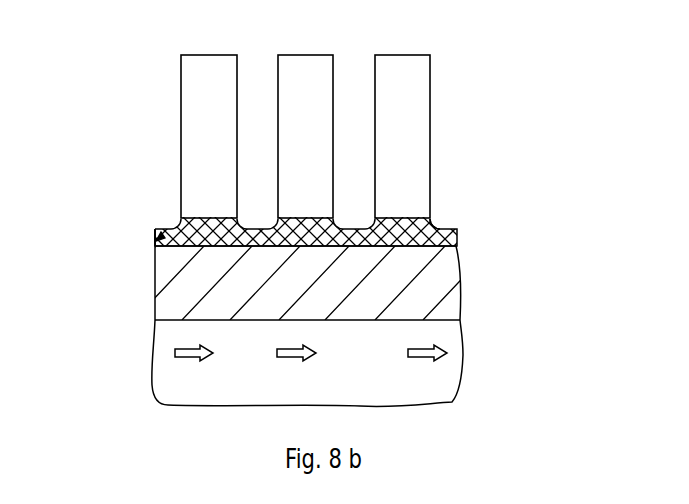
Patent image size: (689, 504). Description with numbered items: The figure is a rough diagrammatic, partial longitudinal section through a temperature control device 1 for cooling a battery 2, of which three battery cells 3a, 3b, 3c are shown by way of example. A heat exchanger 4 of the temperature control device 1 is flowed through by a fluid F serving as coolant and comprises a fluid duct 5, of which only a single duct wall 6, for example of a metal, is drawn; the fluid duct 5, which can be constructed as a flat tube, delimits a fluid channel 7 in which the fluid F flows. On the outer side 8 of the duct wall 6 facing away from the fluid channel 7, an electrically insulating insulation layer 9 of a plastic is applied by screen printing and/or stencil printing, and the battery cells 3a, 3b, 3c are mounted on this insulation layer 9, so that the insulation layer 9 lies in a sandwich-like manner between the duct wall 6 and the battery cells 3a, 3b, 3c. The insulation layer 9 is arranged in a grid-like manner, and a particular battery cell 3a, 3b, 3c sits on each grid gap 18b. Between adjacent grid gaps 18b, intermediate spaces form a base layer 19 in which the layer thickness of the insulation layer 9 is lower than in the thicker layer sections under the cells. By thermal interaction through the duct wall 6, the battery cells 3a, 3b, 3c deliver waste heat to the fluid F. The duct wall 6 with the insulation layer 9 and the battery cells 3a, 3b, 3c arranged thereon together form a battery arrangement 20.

The temperature control device 1 is at (486, 394).
The battery 2 is at (158, 124).
The battery cell 3a is at (220, 111).
The battery cell 3b is at (316, 111).
The battery cell 3c is at (413, 111).
The heat exchanger 4 is at (126, 291).
The fluid duct 5 is at (155, 229).
The duct wall 6 is at (458, 291).
The fluid channel 7 is at (371, 368).
The outer side 8 is at (441, 231).
The insulation layer 9 is at (458, 238).
The grid gap 18b is at (209, 200).
The base layer 19 is at (255, 227).
The battery arrangement 20 is at (468, 114).
The fluid F is at (293, 359).